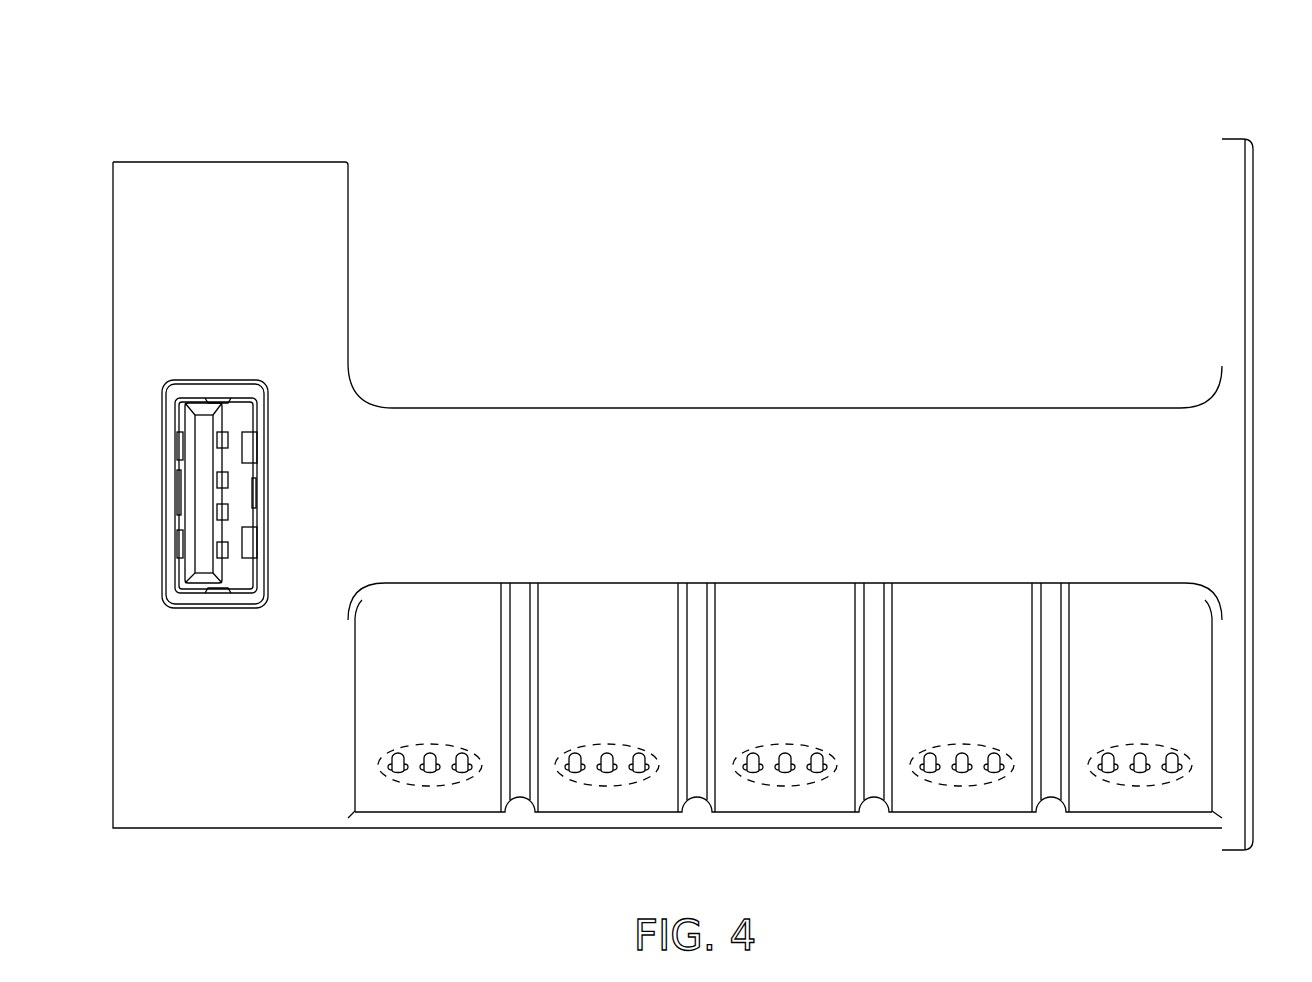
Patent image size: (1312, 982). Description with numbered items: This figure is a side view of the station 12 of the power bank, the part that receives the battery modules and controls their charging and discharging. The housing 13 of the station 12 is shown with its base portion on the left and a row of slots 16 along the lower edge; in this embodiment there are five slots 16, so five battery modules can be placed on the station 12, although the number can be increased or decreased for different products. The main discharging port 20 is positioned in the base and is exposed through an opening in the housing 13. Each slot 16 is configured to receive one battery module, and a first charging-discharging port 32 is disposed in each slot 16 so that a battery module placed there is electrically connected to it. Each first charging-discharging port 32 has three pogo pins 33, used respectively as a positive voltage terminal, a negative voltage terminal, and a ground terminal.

The station 12 is at (1160, 120).
The housing 13 is at (232, 195).
The slots 16 is at (461, 362).
The main discharging port 20 is at (220, 388).
The first charging-discharging port 32 is at (422, 788).
The pogo pins 33 is at (398, 752).